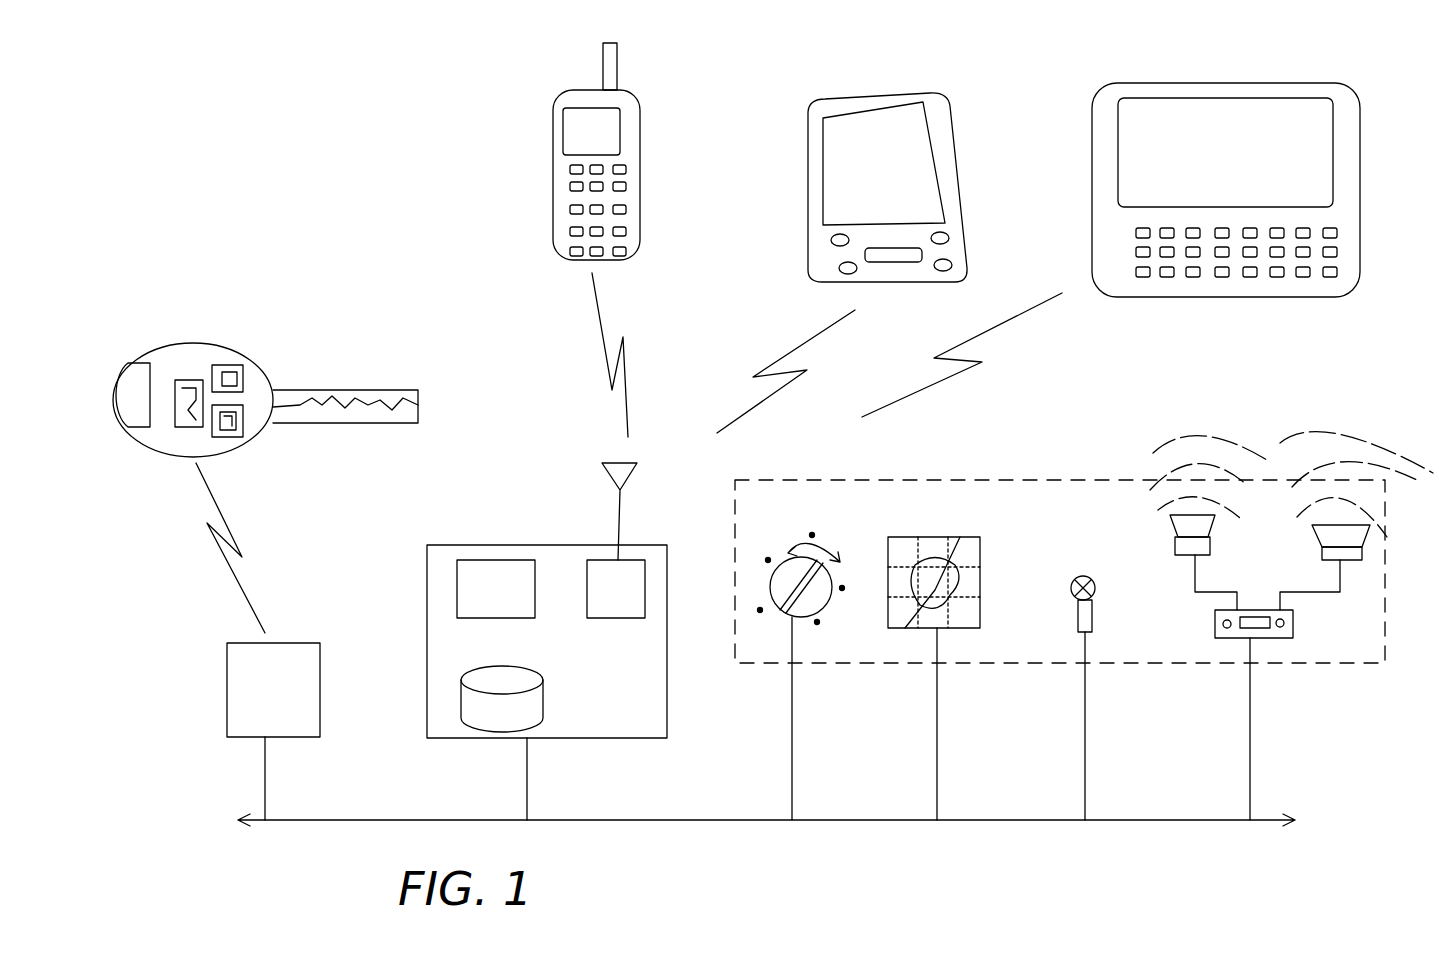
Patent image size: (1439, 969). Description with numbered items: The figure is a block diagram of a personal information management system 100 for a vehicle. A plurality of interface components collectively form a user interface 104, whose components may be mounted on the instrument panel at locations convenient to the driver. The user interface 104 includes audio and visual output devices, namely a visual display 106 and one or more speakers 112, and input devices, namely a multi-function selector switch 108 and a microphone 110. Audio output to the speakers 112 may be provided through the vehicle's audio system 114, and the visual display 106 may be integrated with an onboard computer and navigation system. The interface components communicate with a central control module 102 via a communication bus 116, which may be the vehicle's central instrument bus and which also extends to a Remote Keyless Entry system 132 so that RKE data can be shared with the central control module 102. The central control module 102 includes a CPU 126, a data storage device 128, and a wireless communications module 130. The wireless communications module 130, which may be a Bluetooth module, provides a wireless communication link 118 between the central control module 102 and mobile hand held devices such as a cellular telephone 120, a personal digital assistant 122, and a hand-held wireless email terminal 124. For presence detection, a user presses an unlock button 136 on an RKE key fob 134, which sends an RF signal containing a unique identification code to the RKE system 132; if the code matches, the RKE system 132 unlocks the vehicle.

The personal information management system 100 is at (312, 142).
The central control module 102 is at (562, 641).
The user interface 104 is at (967, 478).
The visual display 106 is at (930, 537).
The multi-function selector switch 108 is at (772, 580).
The microphone 110 is at (1077, 610).
The speakers 112 is at (1180, 537).
The audio system 114 is at (1390, 537).
The communication bus 116 is at (710, 822).
The wireless communication link 118 is at (753, 377).
The cellular telephone 120 is at (553, 163).
The personal digital assistant 122 is at (808, 158).
The hand-held wireless email terminal 124 is at (1092, 165).
The CPU 126 is at (480, 560).
The data storage device 128 is at (545, 682).
The wireless communications module 130 is at (627, 618).
The remote keyless entry system 132 is at (302, 643).
The key fob 134 is at (205, 345).
The button 136 is at (230, 366).